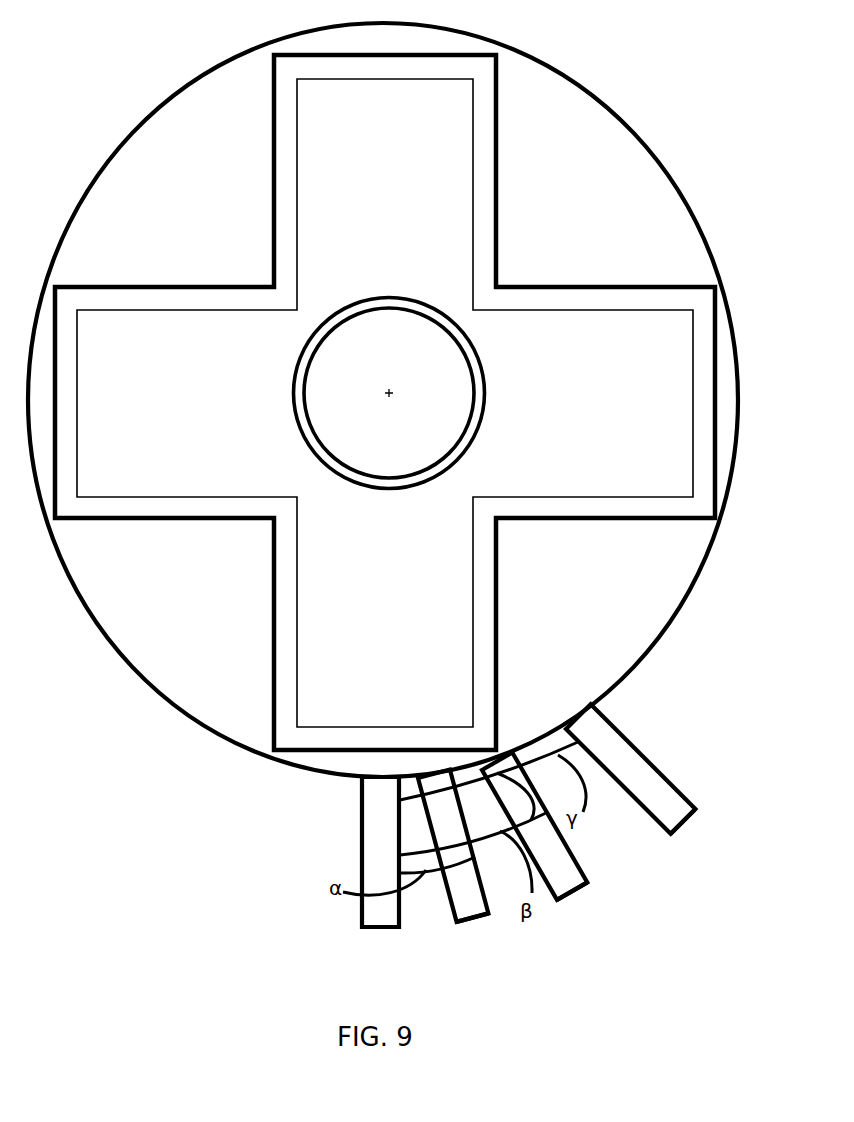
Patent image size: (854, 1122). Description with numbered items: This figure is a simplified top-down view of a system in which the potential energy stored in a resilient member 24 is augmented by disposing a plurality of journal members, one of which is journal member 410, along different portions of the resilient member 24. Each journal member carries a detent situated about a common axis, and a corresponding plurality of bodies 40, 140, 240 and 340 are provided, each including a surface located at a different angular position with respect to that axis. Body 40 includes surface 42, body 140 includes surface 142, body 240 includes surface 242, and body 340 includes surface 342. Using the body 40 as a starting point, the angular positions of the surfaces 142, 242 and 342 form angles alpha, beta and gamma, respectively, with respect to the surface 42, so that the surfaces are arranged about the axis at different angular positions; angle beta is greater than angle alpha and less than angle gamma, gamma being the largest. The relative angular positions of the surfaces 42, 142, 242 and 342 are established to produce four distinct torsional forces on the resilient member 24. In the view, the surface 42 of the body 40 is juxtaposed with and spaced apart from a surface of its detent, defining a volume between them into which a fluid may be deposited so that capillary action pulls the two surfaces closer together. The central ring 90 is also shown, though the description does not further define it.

The resilient member 24 is at (433, 155).
The journal member 410 is at (598, 196).
The central ring opening 90 is at (480, 352).
The body 40 is at (378, 820).
The surface 42 is at (355, 909).
The body 140 is at (478, 902).
The surface 142 is at (434, 889).
The body 240 is at (563, 843).
The surface 242 is at (543, 897).
The body 340 is at (618, 755).
The surface 342 is at (653, 828).